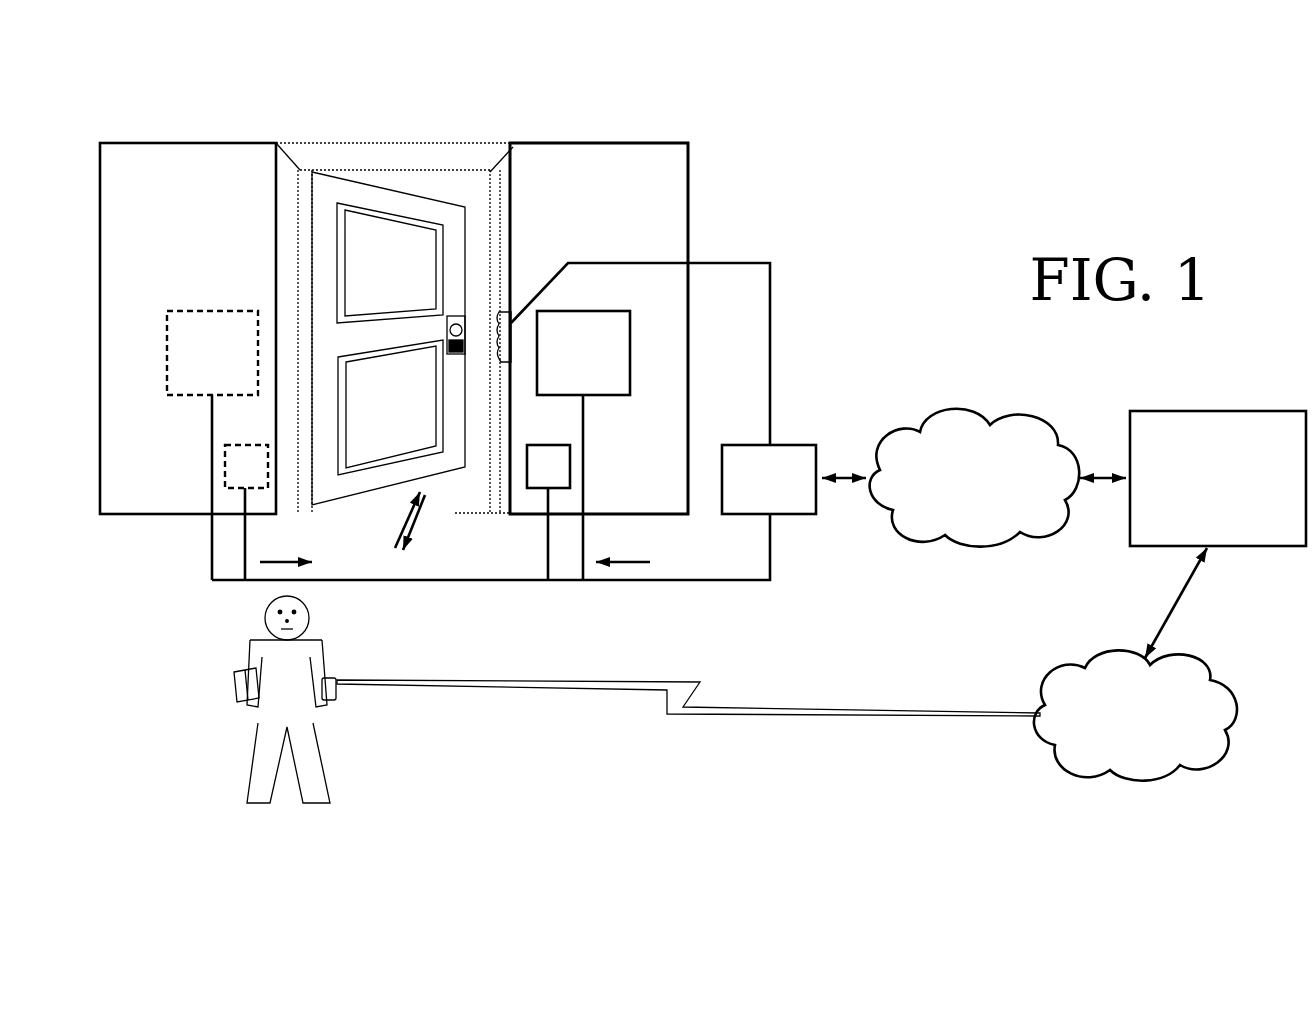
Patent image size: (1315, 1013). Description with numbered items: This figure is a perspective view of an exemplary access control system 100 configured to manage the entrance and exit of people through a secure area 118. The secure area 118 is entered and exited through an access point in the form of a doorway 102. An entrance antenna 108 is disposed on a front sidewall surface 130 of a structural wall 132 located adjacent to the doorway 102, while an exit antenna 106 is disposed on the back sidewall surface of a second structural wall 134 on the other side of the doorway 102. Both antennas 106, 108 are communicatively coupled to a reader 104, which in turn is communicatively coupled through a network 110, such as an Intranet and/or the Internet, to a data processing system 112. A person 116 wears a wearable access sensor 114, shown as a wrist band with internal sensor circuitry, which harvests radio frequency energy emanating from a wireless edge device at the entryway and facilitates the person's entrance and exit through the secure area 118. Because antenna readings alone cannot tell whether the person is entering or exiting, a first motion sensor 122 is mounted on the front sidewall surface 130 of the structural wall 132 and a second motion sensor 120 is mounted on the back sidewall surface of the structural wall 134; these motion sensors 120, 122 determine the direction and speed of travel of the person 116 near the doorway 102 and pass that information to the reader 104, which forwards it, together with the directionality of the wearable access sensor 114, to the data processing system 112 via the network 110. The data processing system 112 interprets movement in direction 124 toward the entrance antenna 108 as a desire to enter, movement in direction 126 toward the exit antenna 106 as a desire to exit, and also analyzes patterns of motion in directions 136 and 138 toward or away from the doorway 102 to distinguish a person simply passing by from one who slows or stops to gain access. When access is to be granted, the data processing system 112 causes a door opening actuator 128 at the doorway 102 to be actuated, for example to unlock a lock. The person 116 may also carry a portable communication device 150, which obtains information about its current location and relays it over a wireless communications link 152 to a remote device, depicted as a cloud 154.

The access control system 100 is at (992, 124).
The doorway 102 is at (388, 342).
The reader 104 is at (514, 421).
The exit antenna 106 is at (212, 445).
The entrance antenna 108 is at (583, 445).
The network 110 is at (974, 478).
The data processing system 112 is at (1218, 534).
The wearable access sensor 114 is at (232, 697).
The person 116 is at (286, 712).
The secure area 118 is at (470, 192).
The second motion sensor 120 is at (246, 512).
The first motion sensor 122 is at (548, 512).
The direction of travel toward entrance 124 is at (386, 520).
The direction of travel toward exit 126 is at (431, 522).
The door opening actuator 128 is at (508, 300).
The front sidewall surface 130 is at (599, 328).
The structural wall 132 is at (690, 212).
The structural wall 134 is at (188, 328).
The direction of travel 136 is at (623, 548).
The direction of travel 138 is at (286, 548).
The portable communication device 150 is at (340, 700).
The wireless communication link 152 is at (688, 658).
The cloud 154 is at (1135, 715).